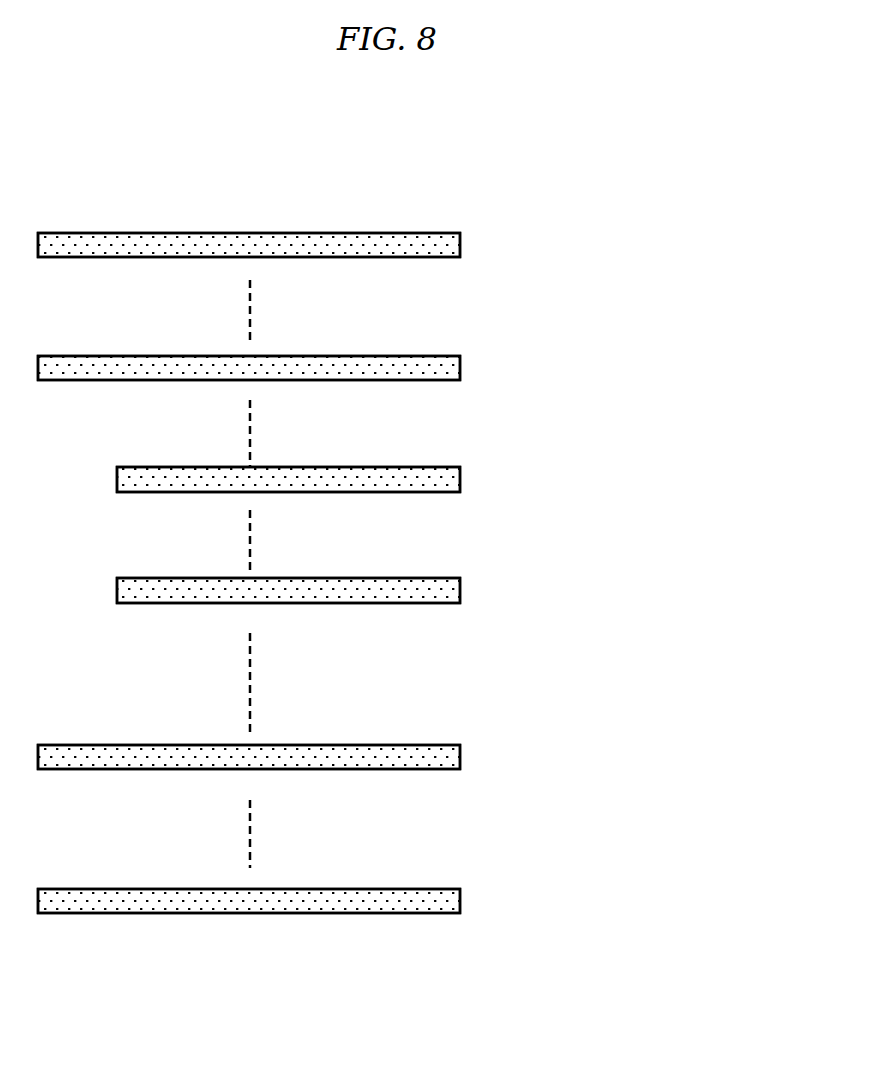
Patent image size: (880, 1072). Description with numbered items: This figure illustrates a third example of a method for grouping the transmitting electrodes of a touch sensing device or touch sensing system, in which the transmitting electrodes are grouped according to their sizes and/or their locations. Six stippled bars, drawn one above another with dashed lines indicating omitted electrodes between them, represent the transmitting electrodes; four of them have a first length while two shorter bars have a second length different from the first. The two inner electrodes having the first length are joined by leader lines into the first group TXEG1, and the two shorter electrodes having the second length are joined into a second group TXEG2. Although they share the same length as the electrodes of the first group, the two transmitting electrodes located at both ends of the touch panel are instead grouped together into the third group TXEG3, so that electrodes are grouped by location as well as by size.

The first group TXEG1 is at (371, 492).
The second group TXEG2 is at (419, 659).
The third group TXEG3 is at (396, 573).